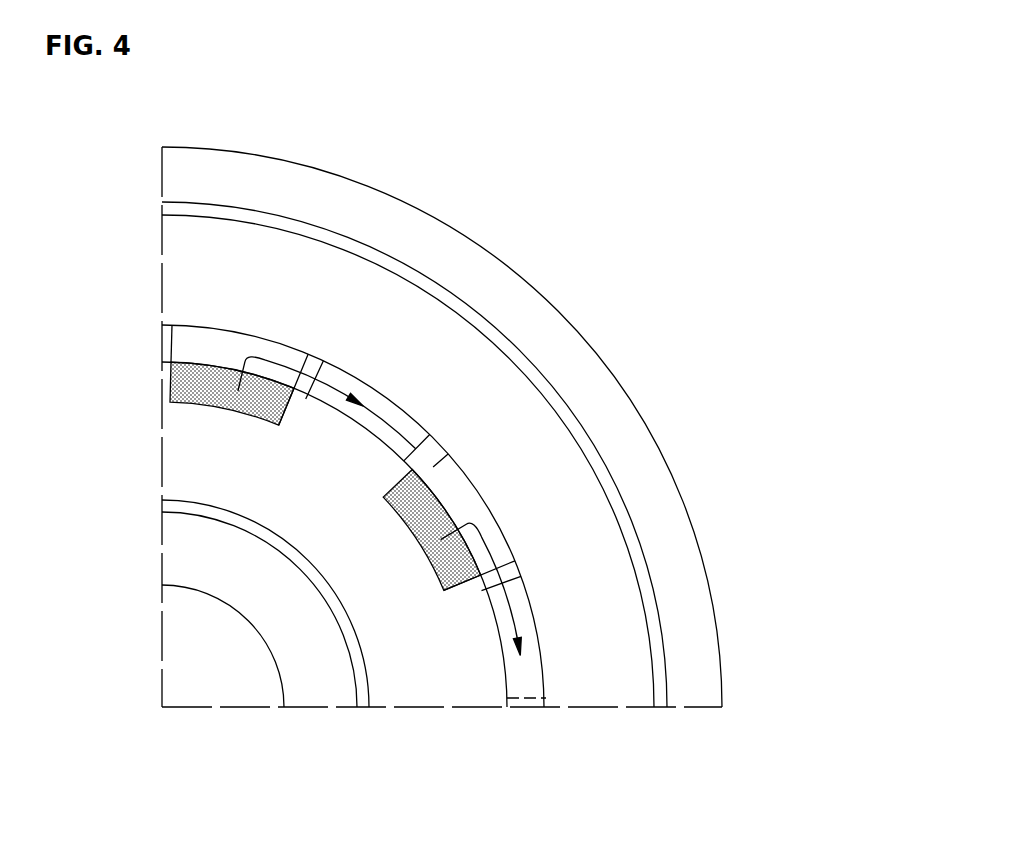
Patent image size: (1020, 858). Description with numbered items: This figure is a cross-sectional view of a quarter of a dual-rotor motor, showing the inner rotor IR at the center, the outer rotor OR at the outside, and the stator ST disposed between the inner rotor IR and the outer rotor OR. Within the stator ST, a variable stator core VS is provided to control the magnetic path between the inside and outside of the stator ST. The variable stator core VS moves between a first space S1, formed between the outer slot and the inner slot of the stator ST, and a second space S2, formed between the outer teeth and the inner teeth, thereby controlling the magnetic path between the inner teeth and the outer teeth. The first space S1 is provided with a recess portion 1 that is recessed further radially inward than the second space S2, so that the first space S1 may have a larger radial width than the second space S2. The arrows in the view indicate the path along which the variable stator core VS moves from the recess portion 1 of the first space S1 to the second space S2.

The recess portion 1 is at (168, 381).
The first space S1 is at (228, 350).
The second space S2 is at (388, 420).
The variable stator core VS is at (207, 395).
The stator ST is at (652, 718).
The inner rotor IR is at (320, 690).
The outer rotor OR is at (697, 690).